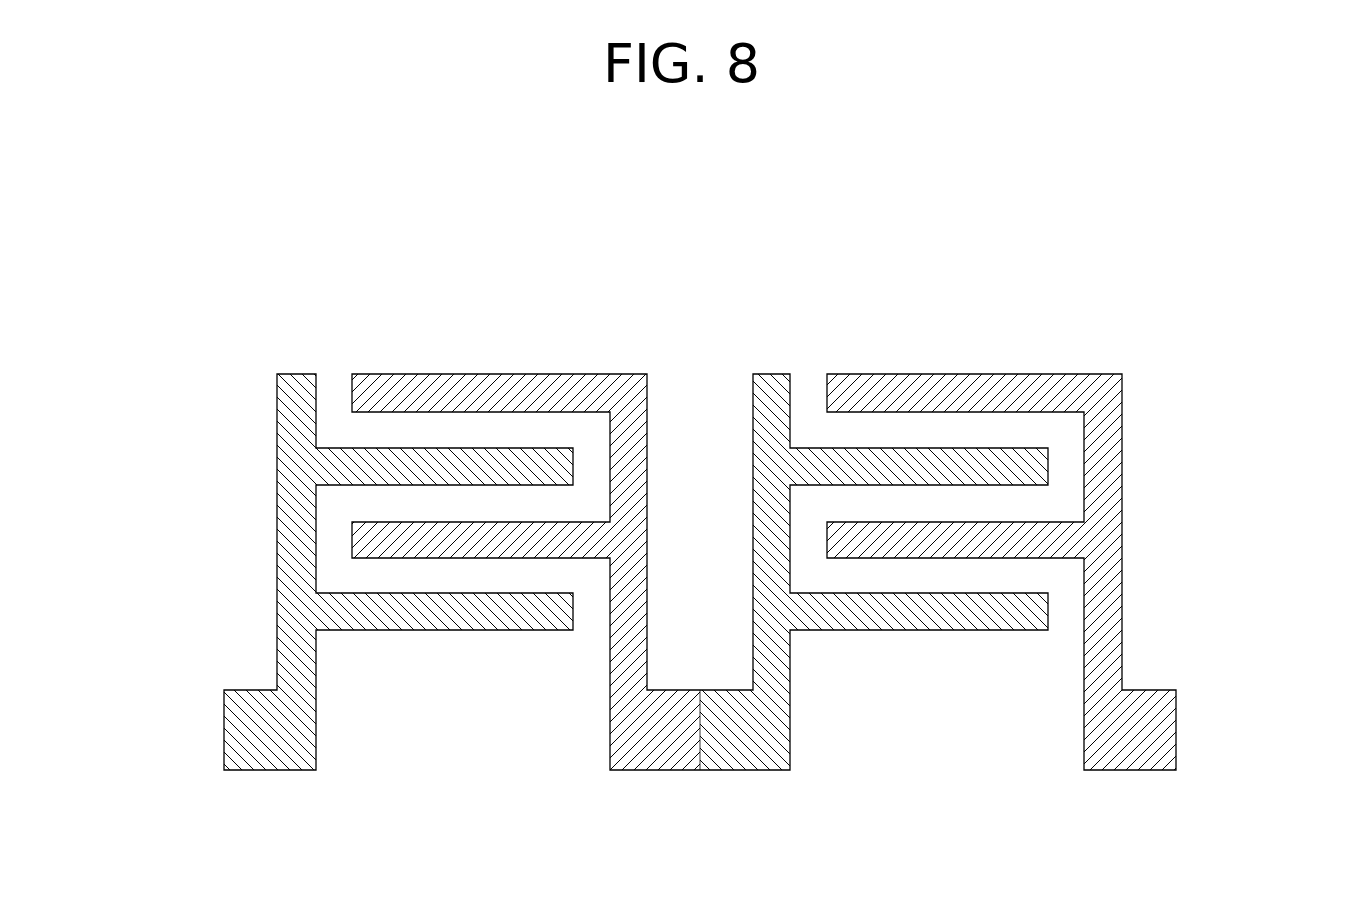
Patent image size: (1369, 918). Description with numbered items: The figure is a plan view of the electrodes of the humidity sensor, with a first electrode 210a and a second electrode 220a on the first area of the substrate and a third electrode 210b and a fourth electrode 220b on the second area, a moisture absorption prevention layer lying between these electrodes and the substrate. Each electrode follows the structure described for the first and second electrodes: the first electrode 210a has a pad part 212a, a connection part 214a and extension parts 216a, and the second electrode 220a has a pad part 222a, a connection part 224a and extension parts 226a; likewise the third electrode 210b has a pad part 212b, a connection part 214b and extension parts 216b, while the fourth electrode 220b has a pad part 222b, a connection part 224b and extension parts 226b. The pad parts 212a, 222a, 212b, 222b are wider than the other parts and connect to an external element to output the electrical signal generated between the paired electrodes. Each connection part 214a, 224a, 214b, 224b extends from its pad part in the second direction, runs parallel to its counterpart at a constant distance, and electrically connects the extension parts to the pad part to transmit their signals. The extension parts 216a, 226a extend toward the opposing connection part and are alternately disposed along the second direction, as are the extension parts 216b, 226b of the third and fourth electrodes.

The first electrode 210a is at (311, 572).
The first pad portion 212a is at (220, 730).
The first connection portion 214a is at (290, 547).
The first finger portions 216a is at (330, 611).
The second electrode 220a is at (526, 630).
The second pad portion 222a is at (655, 765).
The second connection portion 224a is at (628, 646).
The second finger portions 226a is at (441, 541).
The third electrode 210b is at (874, 630).
The third pad portion 212b is at (744, 757).
The third connection portion 214b is at (773, 647).
The third finger portions 216b is at (958, 477).
The fourth electrode 220b is at (1094, 572).
The fourth pad portion 222b is at (1184, 730).
The fourth connection portion 224b is at (1112, 475).
The fourth finger portions 226b is at (1068, 539).